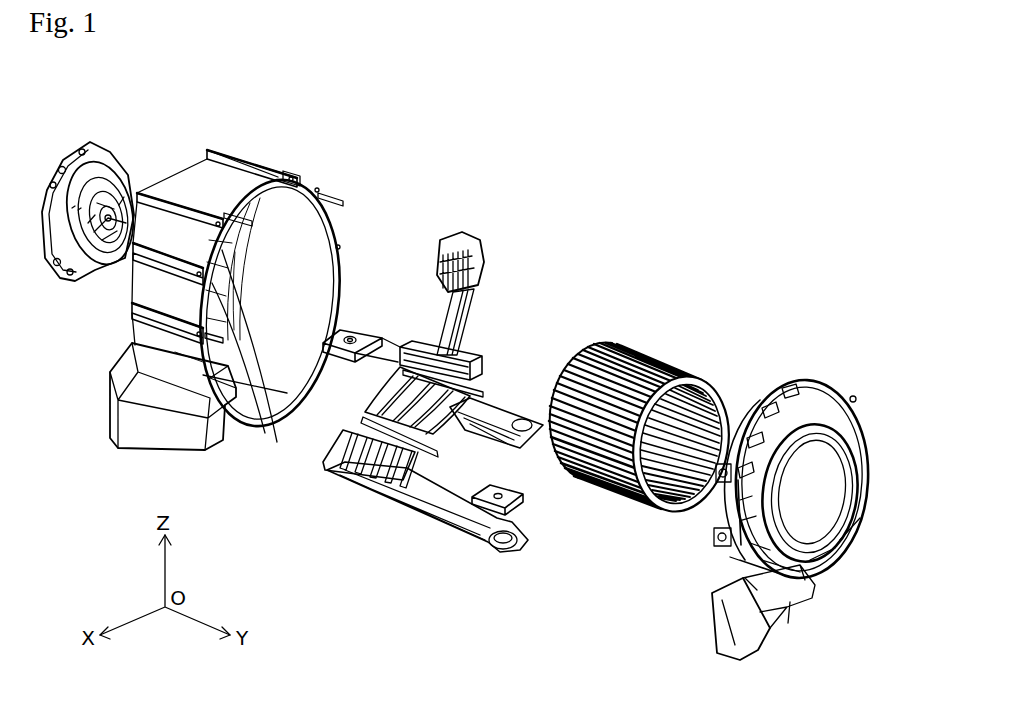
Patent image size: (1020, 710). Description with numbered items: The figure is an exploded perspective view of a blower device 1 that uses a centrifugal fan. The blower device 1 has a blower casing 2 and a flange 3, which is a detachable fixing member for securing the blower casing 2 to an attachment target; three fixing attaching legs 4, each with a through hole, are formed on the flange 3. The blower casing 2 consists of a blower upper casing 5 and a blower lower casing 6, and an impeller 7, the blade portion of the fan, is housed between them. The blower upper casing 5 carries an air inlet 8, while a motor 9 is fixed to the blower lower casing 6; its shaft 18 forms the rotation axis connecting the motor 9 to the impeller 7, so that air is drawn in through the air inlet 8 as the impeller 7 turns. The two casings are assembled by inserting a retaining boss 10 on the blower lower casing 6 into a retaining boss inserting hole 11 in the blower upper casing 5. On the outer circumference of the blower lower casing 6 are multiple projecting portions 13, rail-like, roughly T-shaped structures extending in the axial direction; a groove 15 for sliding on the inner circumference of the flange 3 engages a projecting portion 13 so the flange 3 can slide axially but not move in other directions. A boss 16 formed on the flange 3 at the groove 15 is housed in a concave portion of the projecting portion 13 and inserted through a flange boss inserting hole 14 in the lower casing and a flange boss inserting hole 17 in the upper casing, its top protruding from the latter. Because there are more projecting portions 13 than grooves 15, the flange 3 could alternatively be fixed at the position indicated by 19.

The blower device 1 is at (626, 208).
The blower casing 2 is at (714, 176).
The flange 3 is at (482, 265).
The fixing attaching leg 4 is at (373, 337).
The blower upper casing 5 is at (772, 495).
The blower lower casing 6 is at (215, 269).
The impeller 7 is at (657, 348).
The air inlet 8 is at (832, 512).
The motor 9 is at (88, 150).
The retaining boss 10 is at (345, 205).
The retaining boss inserting hole 11 is at (854, 396).
The projecting portion 13 is at (235, 150).
The flange boss inserting hole 14 is at (272, 432).
The groove for sliding 15 is at (482, 370).
The boss 16 is at (485, 395).
The flange boss inserting hole 17 is at (714, 538).
The shaft 18 is at (130, 200).
The alternative flange attaching position 19 is at (124, 320).